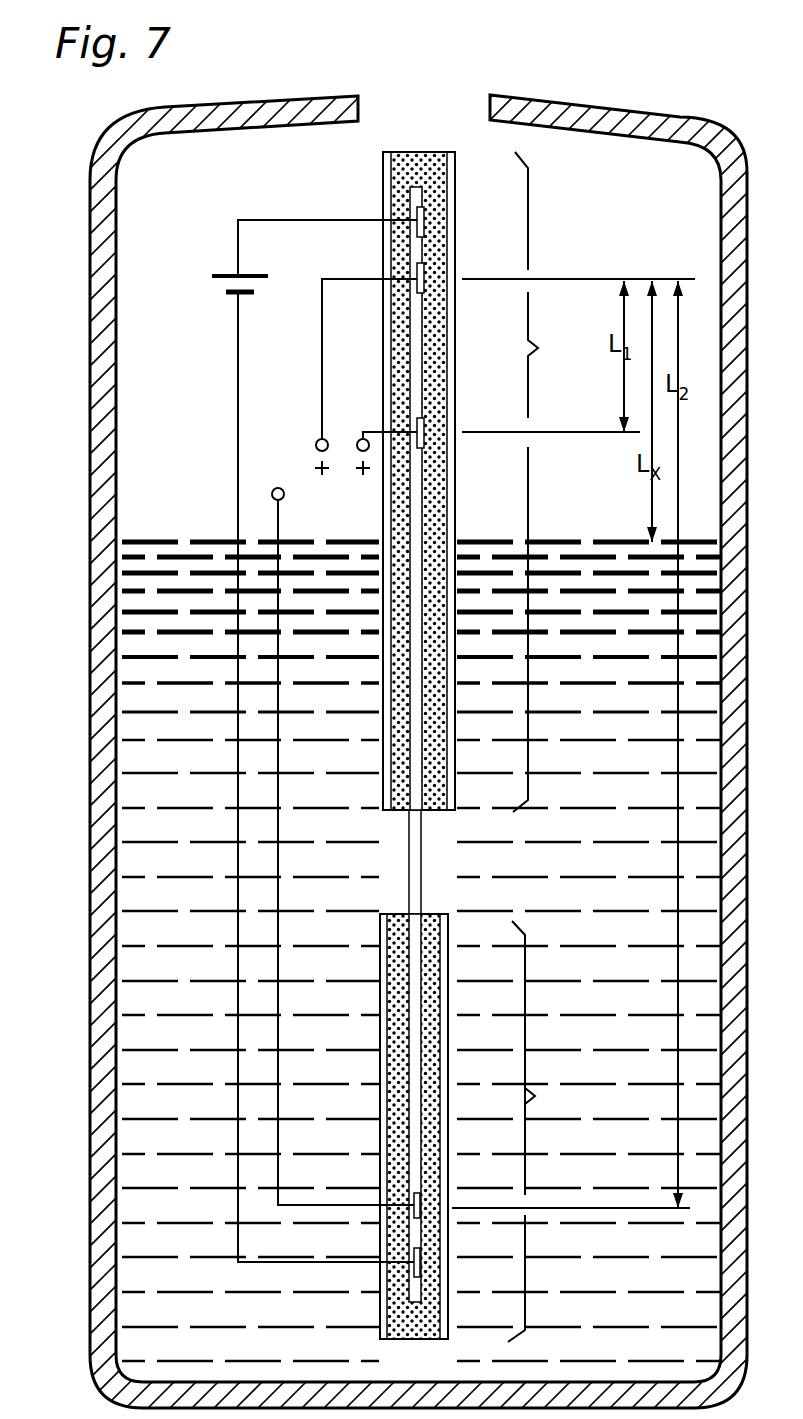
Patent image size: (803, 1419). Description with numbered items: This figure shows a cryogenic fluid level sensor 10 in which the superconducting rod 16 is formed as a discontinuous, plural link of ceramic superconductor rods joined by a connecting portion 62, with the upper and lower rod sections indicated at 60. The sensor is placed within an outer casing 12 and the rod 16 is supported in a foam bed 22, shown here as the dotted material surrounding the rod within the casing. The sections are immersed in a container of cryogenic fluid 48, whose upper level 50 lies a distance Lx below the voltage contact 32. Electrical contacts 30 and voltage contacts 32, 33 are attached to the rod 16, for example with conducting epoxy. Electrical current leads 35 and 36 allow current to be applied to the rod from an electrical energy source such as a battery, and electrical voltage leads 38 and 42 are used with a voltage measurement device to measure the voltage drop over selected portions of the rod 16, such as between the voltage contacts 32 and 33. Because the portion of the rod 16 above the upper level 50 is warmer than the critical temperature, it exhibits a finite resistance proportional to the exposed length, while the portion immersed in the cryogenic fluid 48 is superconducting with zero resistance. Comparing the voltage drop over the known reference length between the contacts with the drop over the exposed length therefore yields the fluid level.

The cryogenic fluid level sensor 10 is at (463, 745).
The outer casing 12 is at (455, 498).
The superconducting rod 16 is at (426, 352).
The foam bed 22 is at (432, 752).
The electrical contact 30 is at (427, 230).
The voltage contact 32 is at (425, 290).
The voltage contact 33 is at (426, 420).
The electrical current lead 35 is at (300, 218).
The electrical current lead 36 is at (238, 402).
The electrical voltage lead 38 is at (322, 355).
The electrical voltage lead 42 is at (368, 432).
The cryogenic fluid 48 is at (160, 650).
The upper level 50 is at (163, 540).
The probe section 60 is at (541, 747).
The connecting tube 62 is at (415, 842).